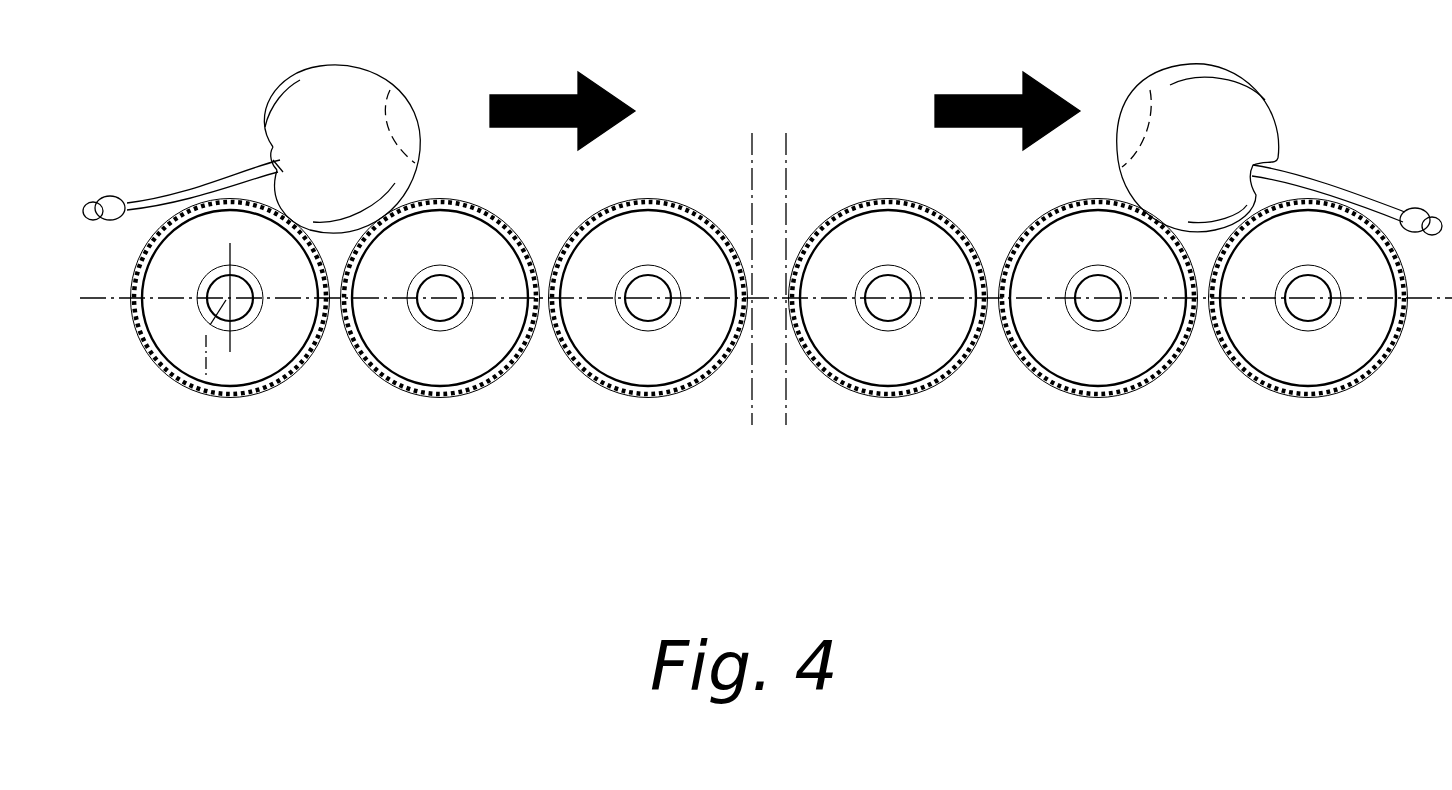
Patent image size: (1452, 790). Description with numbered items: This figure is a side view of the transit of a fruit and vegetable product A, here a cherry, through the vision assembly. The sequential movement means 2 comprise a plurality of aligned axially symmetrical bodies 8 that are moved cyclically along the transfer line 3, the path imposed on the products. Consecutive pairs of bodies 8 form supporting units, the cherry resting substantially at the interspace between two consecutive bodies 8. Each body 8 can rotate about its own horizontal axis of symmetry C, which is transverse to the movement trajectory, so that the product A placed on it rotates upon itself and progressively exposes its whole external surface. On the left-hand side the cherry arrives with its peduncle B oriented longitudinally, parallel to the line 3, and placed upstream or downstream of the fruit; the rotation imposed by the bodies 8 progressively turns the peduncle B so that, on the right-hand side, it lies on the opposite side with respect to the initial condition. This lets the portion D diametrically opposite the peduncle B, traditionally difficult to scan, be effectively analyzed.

The sequential movement means 2 is at (688, 158).
The transfer line 3 is at (98, 302).
The axially symmetrical bodies 8 is at (257, 394).
The fruit and vegetable product A is at (318, 124).
The peduncle B is at (178, 197).
The axis of symmetry C is at (205, 388).
The portion diametrically opposite to the peduncle D is at (390, 123).